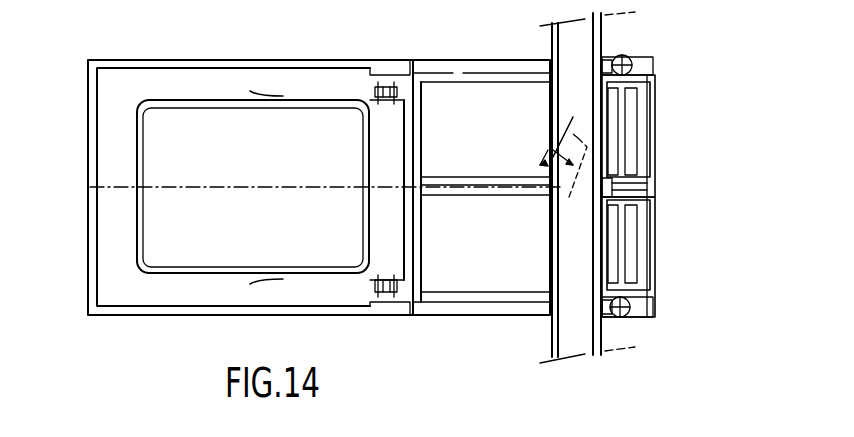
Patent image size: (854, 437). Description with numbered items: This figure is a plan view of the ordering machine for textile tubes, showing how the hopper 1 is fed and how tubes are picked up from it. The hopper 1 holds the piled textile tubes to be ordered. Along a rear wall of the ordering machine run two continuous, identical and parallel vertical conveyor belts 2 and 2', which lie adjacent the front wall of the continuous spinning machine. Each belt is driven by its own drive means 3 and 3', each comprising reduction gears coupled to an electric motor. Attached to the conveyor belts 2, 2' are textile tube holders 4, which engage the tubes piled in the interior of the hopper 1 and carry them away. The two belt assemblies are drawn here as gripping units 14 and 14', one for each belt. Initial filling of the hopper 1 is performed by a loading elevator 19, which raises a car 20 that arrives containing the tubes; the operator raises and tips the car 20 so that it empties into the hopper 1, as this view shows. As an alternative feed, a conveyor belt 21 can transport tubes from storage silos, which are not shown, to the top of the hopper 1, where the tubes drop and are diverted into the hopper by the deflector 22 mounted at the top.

The hopper 1 is at (453, 270).
The vertical conveyor belt 2 is at (650, 129).
The vertical conveyor belt 2' is at (653, 264).
The drive means 3 is at (651, 68).
The drive means 3' is at (642, 336).
The textile tube holders 4 is at (628, 110).
The gripping device 14 is at (685, 136).
The lower gripping device 14' is at (674, 257).
The loading elevator 19 is at (388, 317).
The car 20 is at (150, 147).
The conveyor belt 21 is at (575, 67).
The deflector 22 is at (548, 150).